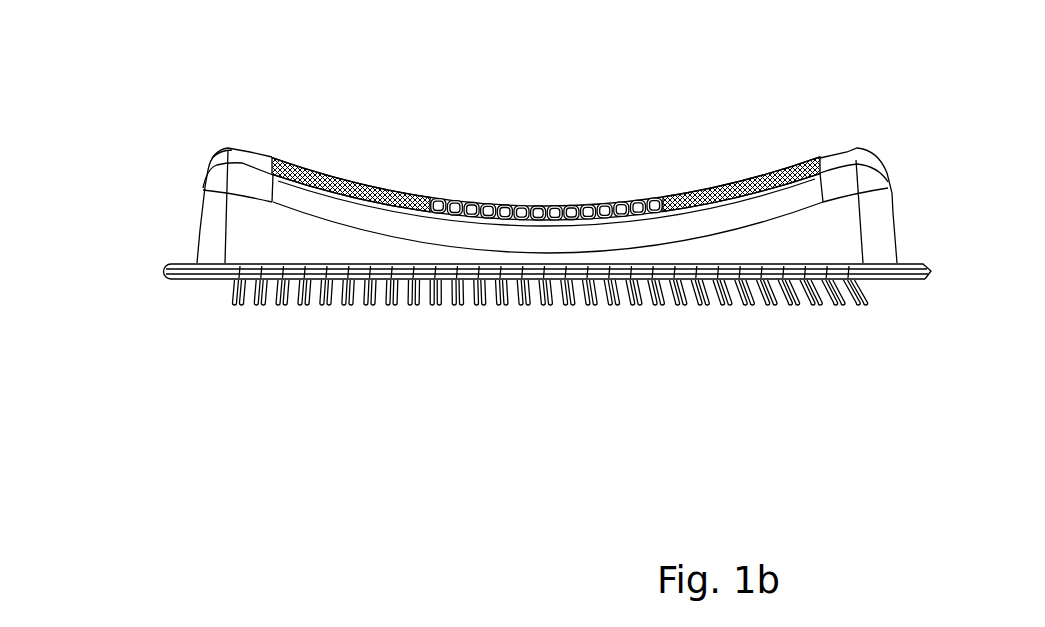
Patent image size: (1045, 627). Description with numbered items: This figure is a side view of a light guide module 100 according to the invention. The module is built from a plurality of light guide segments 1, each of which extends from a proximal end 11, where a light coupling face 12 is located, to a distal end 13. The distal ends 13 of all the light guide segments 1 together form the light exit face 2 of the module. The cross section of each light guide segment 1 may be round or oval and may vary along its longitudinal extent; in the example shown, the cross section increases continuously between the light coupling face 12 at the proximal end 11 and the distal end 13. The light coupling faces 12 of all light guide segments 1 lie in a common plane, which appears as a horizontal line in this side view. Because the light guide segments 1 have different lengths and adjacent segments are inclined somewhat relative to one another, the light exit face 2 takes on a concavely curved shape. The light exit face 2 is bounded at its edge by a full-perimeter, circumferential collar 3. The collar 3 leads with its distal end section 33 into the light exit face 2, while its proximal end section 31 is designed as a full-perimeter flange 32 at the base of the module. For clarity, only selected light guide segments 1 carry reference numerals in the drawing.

The light guide module 100 is at (563, 163).
The light guide segments 1 is at (260, 307).
The proximal end 11 is at (325, 307).
The light coupling face 12 is at (392, 307).
The distal ends 13 is at (356, 180).
The light exit face 2 is at (483, 197).
The collar 3 is at (214, 228).
The proximal end section 31 is at (190, 283).
The flange 32 is at (163, 267).
The distal end section 33 is at (228, 140).